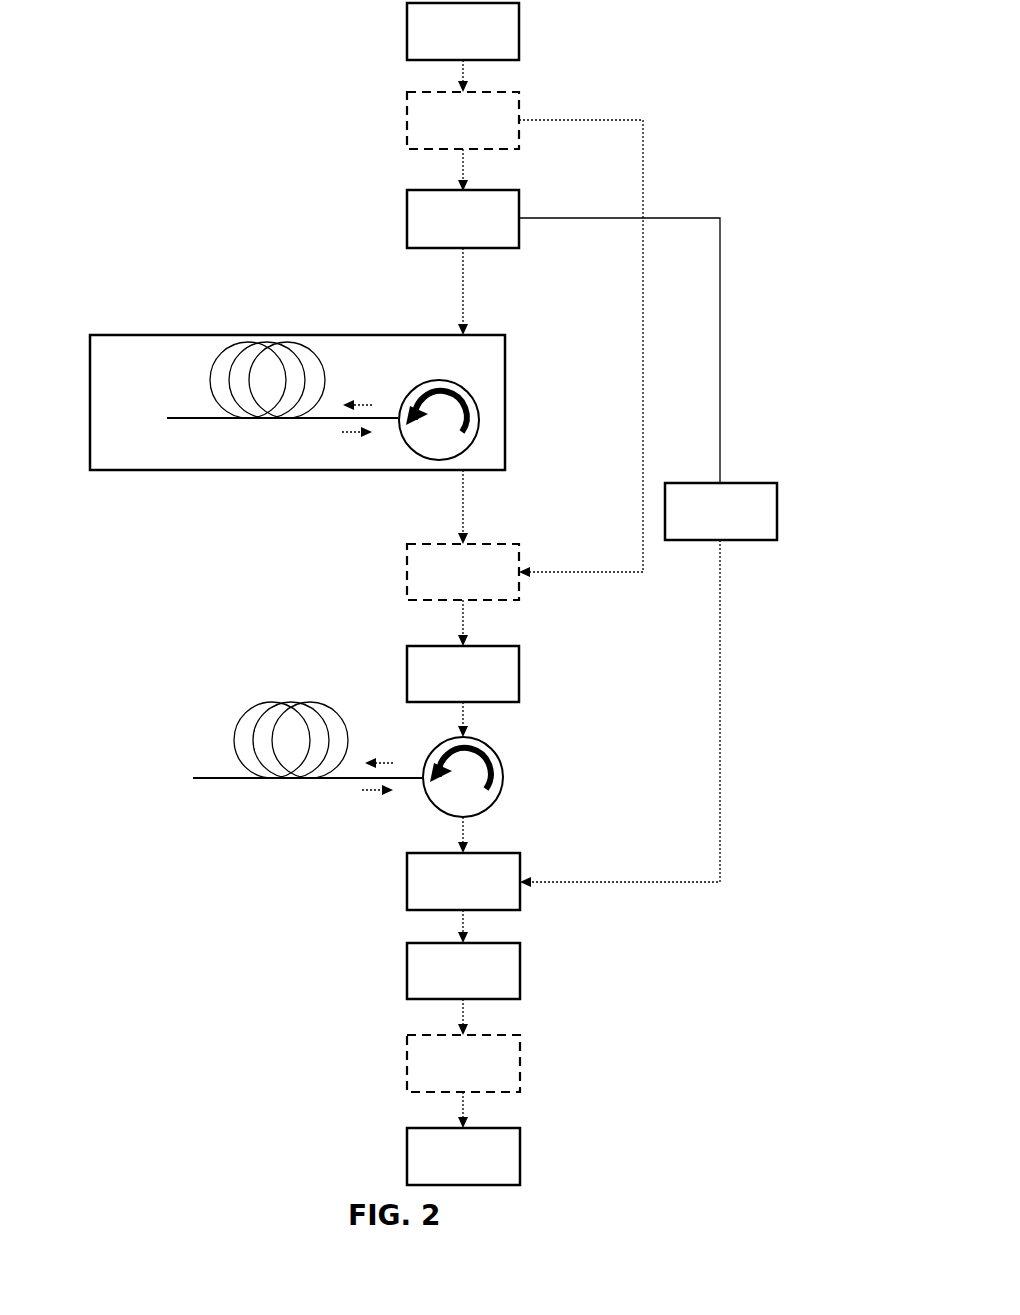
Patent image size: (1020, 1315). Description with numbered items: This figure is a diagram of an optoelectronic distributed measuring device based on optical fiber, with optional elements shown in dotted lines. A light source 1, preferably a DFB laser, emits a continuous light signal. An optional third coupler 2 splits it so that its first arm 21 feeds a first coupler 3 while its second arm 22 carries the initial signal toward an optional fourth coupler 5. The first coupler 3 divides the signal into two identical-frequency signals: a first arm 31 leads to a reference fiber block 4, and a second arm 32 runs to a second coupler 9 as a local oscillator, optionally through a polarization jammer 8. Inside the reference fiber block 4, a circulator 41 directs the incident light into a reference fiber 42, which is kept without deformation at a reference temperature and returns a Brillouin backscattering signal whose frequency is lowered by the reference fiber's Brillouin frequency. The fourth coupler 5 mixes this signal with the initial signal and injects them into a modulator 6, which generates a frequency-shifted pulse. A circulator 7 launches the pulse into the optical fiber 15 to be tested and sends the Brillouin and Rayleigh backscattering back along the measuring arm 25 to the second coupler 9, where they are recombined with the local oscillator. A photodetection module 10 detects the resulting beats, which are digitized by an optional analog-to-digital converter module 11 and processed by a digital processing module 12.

The light source 1 is at (463, 31).
The third coupler 2 is at (463, 120).
The first coupler 3 is at (463, 219).
The reference fiber block 4 is at (297, 403).
The fourth coupler 5 is at (463, 572).
The modulator 6 is at (463, 674).
The circulator 7 is at (463, 777).
The polarization jammer 8 is at (721, 511).
The second coupler 9 is at (463, 881).
The photodetection module 10 is at (463, 971).
The analog-to-digital converter module 11 is at (463, 1063).
The digital processing module 12 is at (463, 1156).
The optical fiber to be tested 15 is at (250, 715).
The first arm of the third coupler 21 is at (463, 165).
The second arm of the third coupler 22 is at (596, 119).
The measuring arm 25 is at (465, 832).
The first arm 31 is at (463, 274).
The second arm 32 is at (678, 217).
The circulator 41 is at (415, 452).
The reference fiber 42 is at (218, 362).